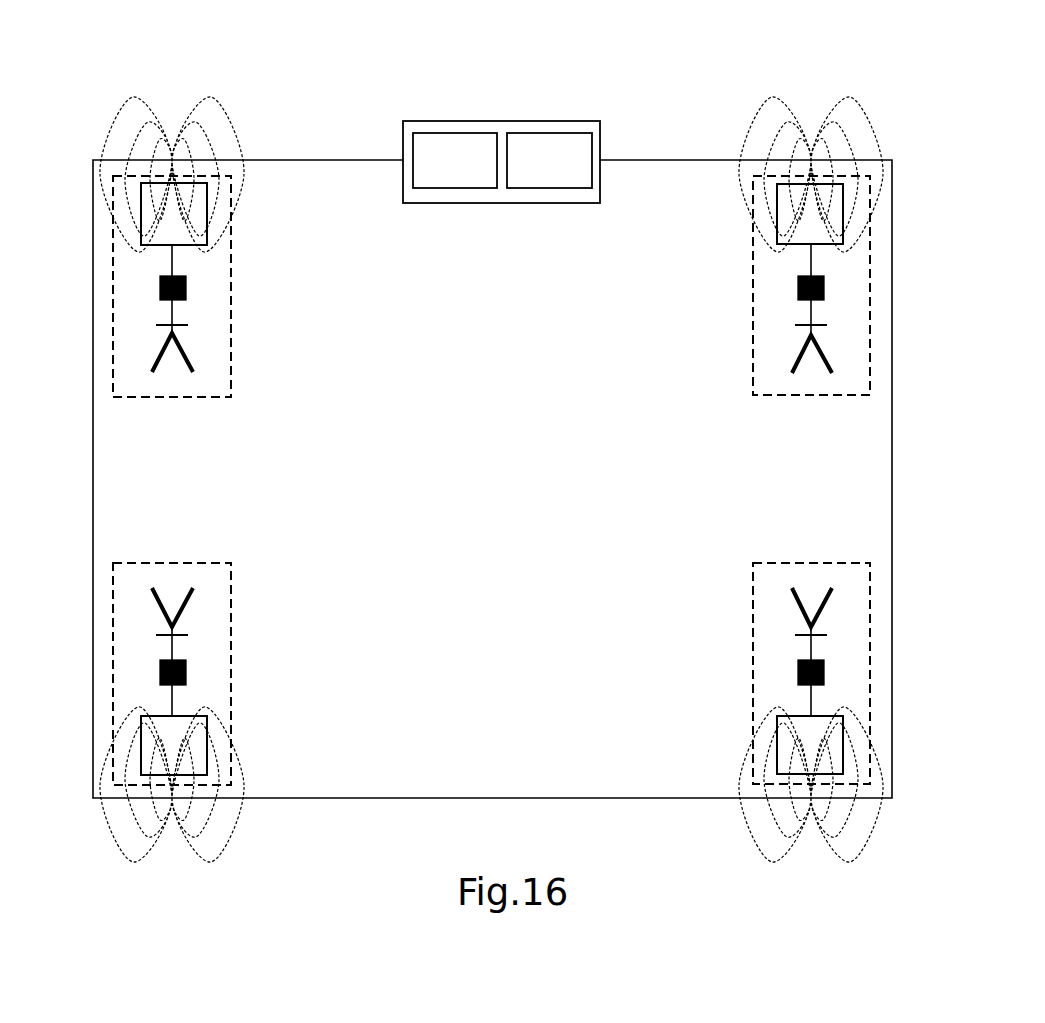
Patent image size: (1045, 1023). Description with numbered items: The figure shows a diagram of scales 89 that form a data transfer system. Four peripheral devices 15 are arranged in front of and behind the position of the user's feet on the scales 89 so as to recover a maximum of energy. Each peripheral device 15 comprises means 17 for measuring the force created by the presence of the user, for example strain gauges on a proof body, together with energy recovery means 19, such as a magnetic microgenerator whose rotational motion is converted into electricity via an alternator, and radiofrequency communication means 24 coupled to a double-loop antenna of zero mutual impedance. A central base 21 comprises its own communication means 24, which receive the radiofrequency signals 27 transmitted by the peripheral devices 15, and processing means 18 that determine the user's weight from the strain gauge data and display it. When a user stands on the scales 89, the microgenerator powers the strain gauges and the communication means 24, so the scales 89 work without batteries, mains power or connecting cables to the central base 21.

The peripheral device 15 is at (232, 286).
The means for measuring the force 17 is at (160, 281).
The processing means 18 is at (566, 174).
The energy recovery means 19 is at (190, 356).
The central base 21 is at (551, 121).
The radiofrequency communication means 24 is at (472, 174).
The radiofrequency signals 27 is at (142, 98).
The scales 89 is at (347, 146).